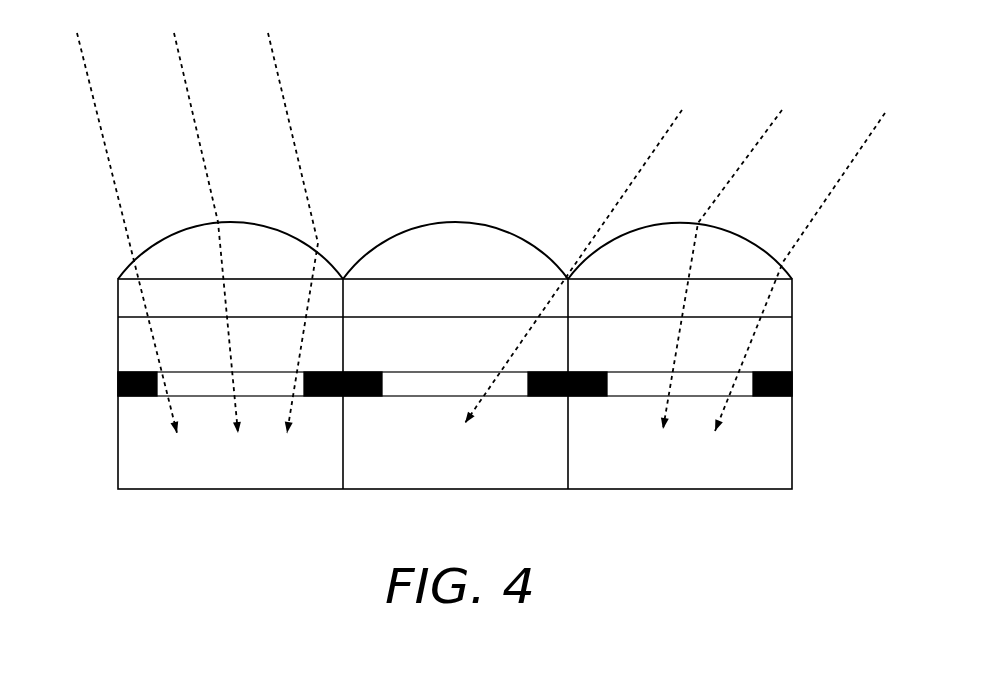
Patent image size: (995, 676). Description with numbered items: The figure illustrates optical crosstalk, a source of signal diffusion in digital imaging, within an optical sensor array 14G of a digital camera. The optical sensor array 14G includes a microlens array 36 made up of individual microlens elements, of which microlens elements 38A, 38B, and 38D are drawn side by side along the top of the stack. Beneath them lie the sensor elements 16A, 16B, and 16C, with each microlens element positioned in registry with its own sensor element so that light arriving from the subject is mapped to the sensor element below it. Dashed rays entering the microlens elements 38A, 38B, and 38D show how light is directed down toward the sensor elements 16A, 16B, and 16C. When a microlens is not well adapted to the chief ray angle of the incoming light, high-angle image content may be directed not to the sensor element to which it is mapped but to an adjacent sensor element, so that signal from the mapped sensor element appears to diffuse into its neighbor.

The microlens array 36 is at (400, 237).
The optical sensor array 14G is at (401, 417).
The microlens element 38A is at (288, 268).
The microlens element 38B is at (514, 268).
The microlens element 38D is at (753, 268).
The sensor element 16A is at (208, 350).
The sensor element 16B is at (452, 350).
The sensor element 16C is at (639, 350).